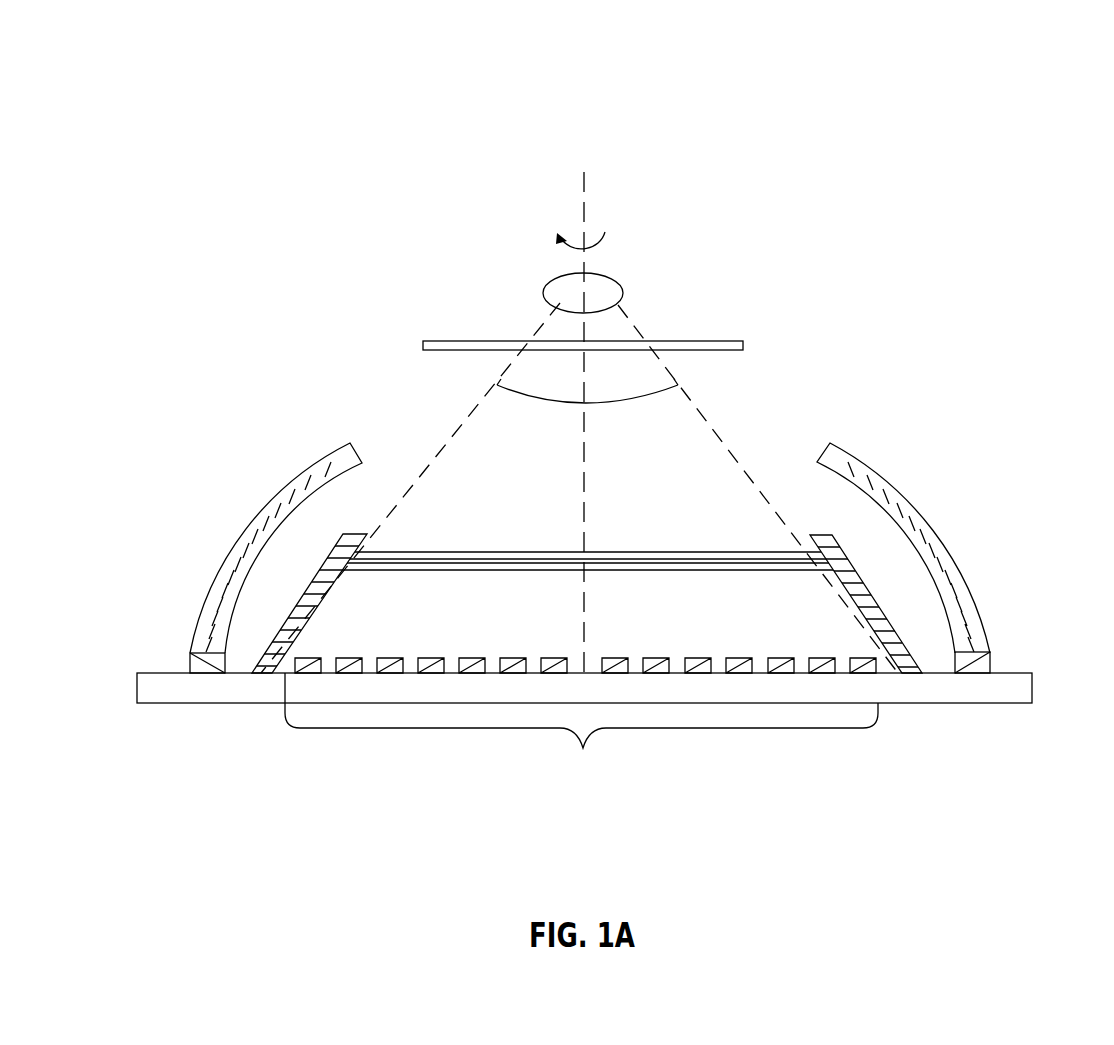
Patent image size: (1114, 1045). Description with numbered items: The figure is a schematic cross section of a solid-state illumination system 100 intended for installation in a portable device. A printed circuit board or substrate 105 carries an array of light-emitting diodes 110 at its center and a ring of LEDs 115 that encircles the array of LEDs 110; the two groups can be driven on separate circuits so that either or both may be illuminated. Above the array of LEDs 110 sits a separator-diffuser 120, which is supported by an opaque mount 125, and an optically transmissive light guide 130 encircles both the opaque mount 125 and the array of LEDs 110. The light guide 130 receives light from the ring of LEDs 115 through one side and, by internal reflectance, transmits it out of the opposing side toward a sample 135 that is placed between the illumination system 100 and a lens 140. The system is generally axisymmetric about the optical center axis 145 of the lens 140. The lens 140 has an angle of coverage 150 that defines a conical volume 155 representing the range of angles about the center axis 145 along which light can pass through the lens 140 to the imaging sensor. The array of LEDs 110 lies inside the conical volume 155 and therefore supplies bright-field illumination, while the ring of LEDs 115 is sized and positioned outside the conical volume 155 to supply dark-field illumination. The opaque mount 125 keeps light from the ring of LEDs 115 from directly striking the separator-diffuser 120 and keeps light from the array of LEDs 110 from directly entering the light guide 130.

The solid-state illumination system 100 is at (996, 73).
The substrate 105 is at (1025, 693).
The array of light-emitting diodes 110 is at (581, 718).
The ring of LEDs 115 is at (208, 673).
The separator-diffuser 120 is at (638, 550).
The opaque mount 125 is at (333, 576).
The optically transmissive light guide 130 is at (287, 498).
The sample 135 is at (743, 346).
The lens 140 is at (617, 278).
The optical center axis 145 is at (585, 187).
The angle of coverage 150 is at (563, 402).
The conical volume 155 is at (428, 468).